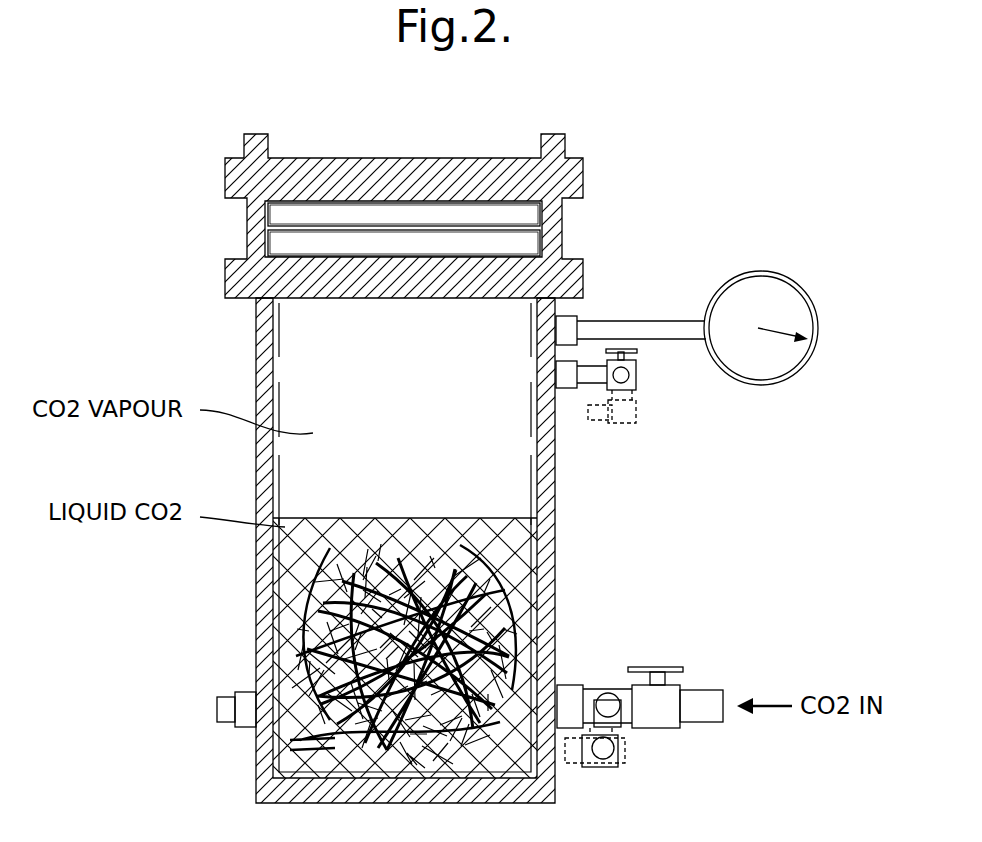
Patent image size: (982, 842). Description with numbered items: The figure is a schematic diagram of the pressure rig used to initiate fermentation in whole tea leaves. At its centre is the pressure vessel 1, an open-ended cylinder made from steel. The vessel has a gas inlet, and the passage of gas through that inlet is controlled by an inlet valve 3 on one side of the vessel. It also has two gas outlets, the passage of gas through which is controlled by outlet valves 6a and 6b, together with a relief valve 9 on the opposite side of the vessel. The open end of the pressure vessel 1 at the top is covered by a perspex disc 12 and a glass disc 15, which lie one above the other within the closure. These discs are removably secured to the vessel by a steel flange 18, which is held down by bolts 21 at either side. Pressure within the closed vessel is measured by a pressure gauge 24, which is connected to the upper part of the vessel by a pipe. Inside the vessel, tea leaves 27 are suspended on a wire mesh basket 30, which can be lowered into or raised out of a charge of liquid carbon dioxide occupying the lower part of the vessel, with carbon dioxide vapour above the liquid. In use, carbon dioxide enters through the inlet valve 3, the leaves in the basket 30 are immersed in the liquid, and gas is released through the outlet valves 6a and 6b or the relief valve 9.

The pressure vessel 1 is at (262, 345).
The inlet valve 3 is at (656, 667).
The outlet valve 6a is at (615, 752).
The outlet valve 6b is at (636, 385).
The relief valve 9 is at (225, 708).
The perspex disc 12 is at (285, 216).
The glass disc 15 is at (280, 242).
The steel flange 18 is at (568, 182).
The bolts 21 is at (268, 145).
The pressure gauge 24 is at (775, 272).
The tea leaves 27 is at (295, 627).
The wire mesh basket 30 is at (531, 480).